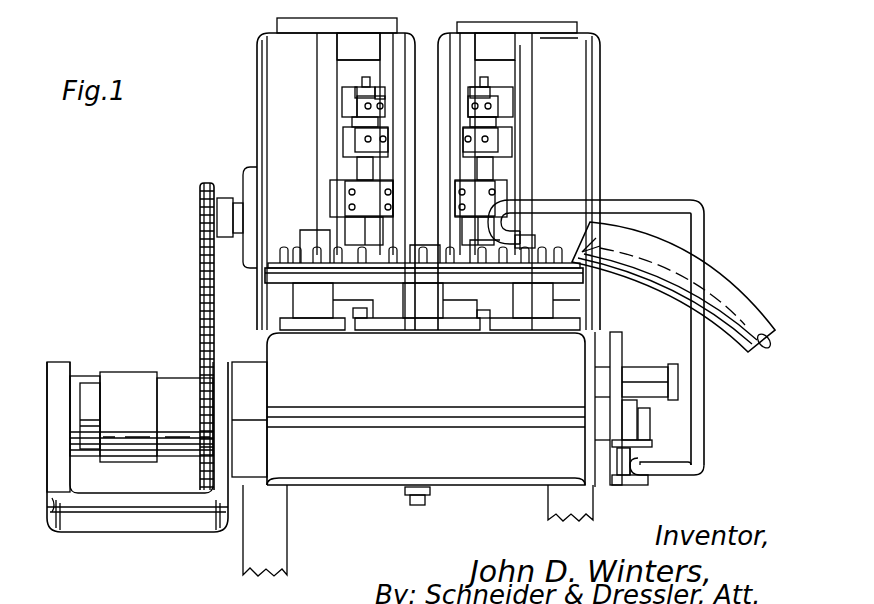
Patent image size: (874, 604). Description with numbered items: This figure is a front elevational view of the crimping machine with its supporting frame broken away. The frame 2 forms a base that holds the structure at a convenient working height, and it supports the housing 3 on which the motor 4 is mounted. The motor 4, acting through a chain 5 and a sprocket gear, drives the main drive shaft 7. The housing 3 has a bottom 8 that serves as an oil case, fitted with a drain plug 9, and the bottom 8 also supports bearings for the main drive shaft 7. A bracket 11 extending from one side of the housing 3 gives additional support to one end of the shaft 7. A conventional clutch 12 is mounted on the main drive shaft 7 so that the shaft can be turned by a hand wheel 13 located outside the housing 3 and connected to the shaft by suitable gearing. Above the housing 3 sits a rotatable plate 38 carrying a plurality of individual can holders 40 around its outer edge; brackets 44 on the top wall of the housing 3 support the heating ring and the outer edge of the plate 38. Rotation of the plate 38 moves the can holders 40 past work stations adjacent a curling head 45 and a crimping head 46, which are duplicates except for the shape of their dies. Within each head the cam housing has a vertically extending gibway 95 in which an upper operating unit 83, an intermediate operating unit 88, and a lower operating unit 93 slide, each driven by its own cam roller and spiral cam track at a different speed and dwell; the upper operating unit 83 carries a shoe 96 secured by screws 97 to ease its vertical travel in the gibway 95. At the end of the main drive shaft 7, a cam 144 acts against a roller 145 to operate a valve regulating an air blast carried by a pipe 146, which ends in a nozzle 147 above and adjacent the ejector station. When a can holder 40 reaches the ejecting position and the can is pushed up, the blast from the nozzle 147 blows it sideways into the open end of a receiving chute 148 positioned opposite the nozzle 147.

The frame 2 is at (272, 507).
The housing 3 is at (437, 383).
The motor 4 is at (243, 182).
The chain 5 is at (200, 282).
The main drive shaft 7 is at (45, 425).
The bottom 8 is at (350, 476).
The drain plug 9 is at (430, 500).
The bracket 11 is at (125, 520).
The clutch 12 is at (125, 380).
The hand wheel 13 is at (683, 382).
The plate 38 is at (266, 256).
The can holders 40 is at (605, 246).
The brackets 44 is at (322, 310).
The curling head 45 is at (263, 58).
The crimping head 46 is at (600, 42).
The upper operating unit 83 is at (467, 106).
The intermediate operating unit 88 is at (463, 140).
The lower operating unit 93 is at (455, 200).
The gibway 95 is at (333, 48).
The shoe 96 is at (504, 105).
The screws 97 is at (343, 103).
The cam 144 is at (642, 410).
The roller 145 is at (652, 430).
The pipe 146 is at (707, 222).
The nozzle 147 is at (530, 240).
The receiving chute 148 is at (742, 305).